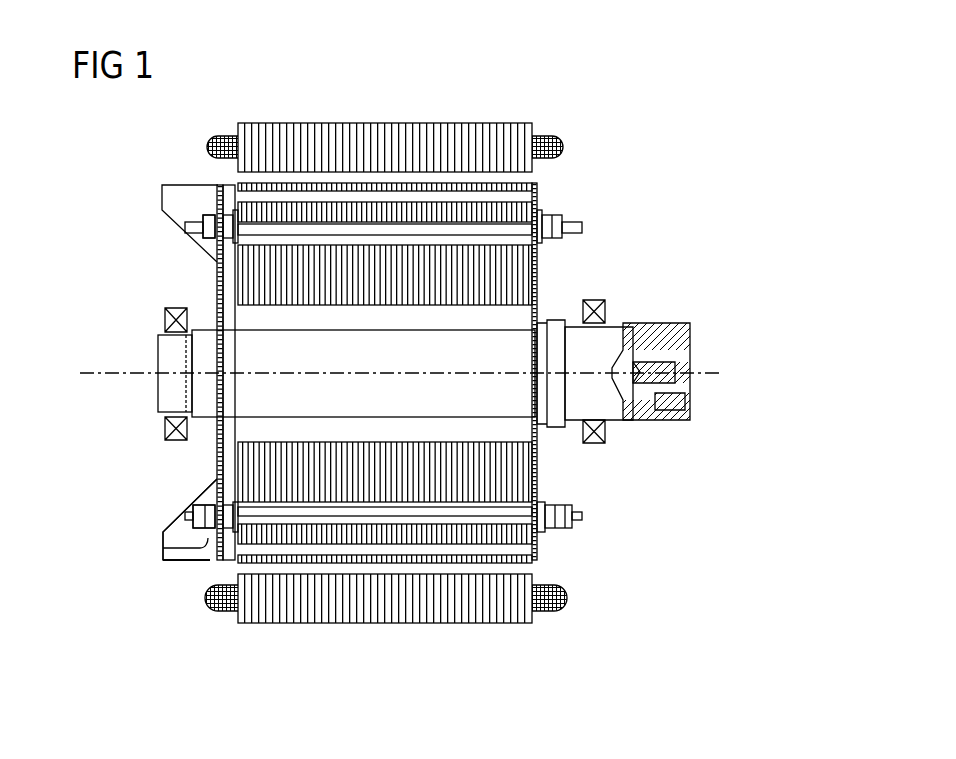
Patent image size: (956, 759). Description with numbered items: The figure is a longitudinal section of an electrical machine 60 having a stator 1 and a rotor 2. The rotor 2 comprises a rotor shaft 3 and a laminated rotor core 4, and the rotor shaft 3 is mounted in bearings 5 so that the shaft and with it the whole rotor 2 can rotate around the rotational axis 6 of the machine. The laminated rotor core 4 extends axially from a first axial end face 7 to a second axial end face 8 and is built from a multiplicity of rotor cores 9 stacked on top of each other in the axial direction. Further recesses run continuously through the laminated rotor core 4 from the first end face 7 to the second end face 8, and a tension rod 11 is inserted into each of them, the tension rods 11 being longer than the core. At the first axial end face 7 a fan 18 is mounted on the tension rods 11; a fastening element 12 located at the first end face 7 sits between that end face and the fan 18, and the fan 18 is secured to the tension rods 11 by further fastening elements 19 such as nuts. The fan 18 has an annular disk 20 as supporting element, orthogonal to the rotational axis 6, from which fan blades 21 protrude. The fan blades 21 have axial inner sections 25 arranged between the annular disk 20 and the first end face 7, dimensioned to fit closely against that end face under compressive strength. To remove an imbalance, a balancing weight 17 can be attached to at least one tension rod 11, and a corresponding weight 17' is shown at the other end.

The stator 1 is at (418, 123).
The rotor 2 is at (636, 229).
The rotor shaft 3 is at (158, 392).
The laminated rotor core 4 is at (558, 484).
The bearings 5 is at (165, 321).
The rotational axis 6 is at (92, 371).
The first axial end face 7 is at (236, 278).
The second axial end face 8 is at (537, 274).
The rotor cores 9 is at (522, 465).
The tension rod 11 is at (185, 228).
The fastening element 12 is at (542, 214).
The balancing weight 17 is at (355, 554).
The nut 17' is at (596, 354).
The fan 18 is at (160, 512).
The further fastening elements 19 is at (205, 218).
The annular disk 20 is at (207, 563).
The fan blades 21 is at (160, 197).
The axial inner sections 25 is at (230, 192).
The electrical machine 60 is at (501, 84).